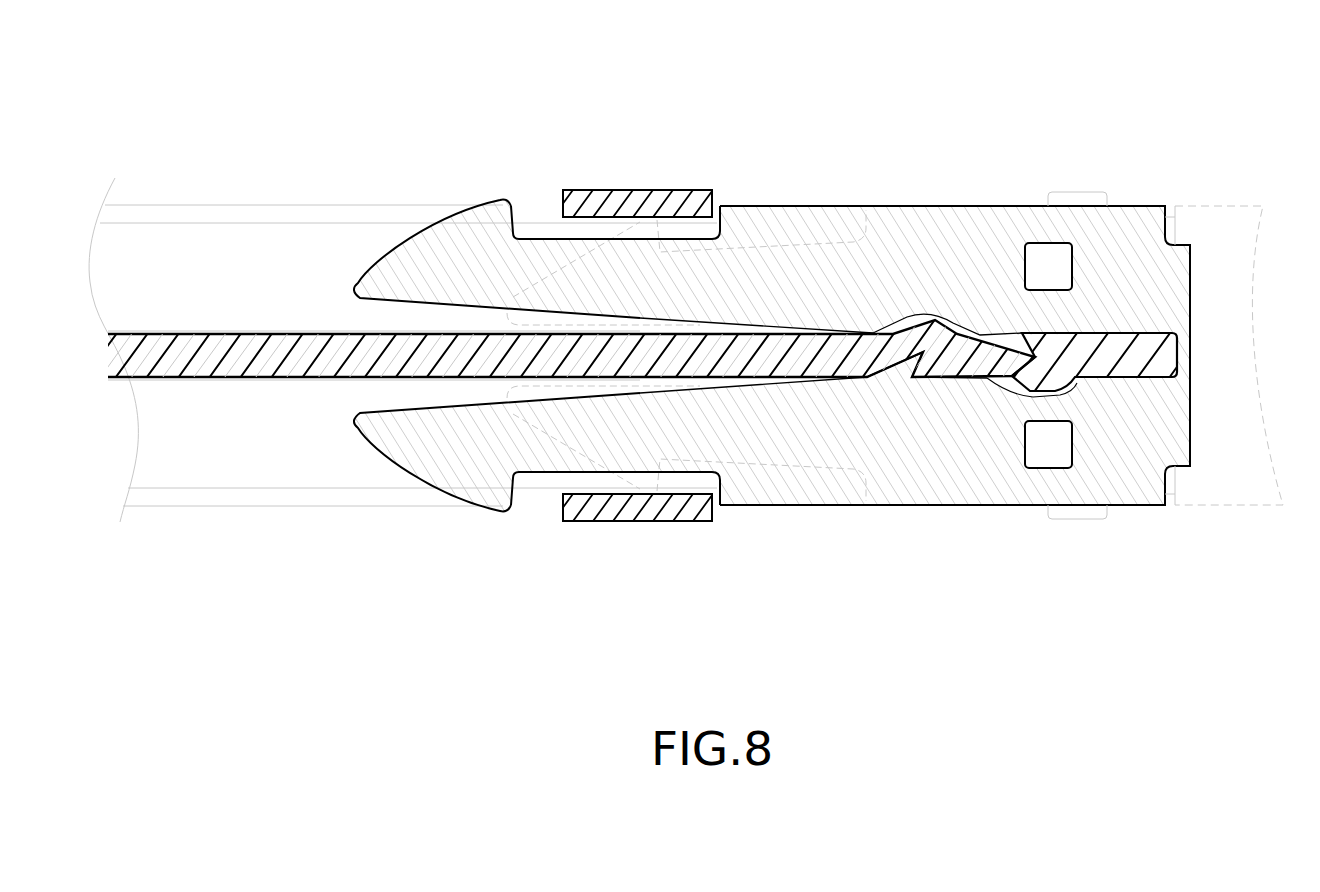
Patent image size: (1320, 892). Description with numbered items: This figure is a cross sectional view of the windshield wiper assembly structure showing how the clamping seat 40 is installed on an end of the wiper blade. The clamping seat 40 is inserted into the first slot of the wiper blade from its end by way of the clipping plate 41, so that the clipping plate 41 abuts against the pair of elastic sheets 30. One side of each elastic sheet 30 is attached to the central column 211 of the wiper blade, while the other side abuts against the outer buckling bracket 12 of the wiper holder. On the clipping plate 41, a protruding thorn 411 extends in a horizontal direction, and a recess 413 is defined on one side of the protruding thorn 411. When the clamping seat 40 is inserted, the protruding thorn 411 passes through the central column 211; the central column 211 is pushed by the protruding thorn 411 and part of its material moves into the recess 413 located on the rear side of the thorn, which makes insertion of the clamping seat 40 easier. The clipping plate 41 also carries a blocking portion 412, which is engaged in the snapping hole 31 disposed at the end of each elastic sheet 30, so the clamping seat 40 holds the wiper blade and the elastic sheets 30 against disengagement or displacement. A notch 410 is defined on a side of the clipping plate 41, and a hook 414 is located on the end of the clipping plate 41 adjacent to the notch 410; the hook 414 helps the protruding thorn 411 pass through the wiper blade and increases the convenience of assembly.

The elastic sheet 30 is at (192, 248).
The central column 211 is at (293, 353).
The hook 414 is at (418, 256).
The notch 410 is at (545, 239).
The clipping plate 41 is at (613, 263).
The outer buckling bracket 12 is at (680, 202).
The recess 413 is at (912, 316).
The blocking portion 412 is at (1038, 262).
The snapping hole 31 is at (1075, 267).
The clamping seat 40 is at (1200, 273).
The protruding thorn 411 is at (1018, 343).